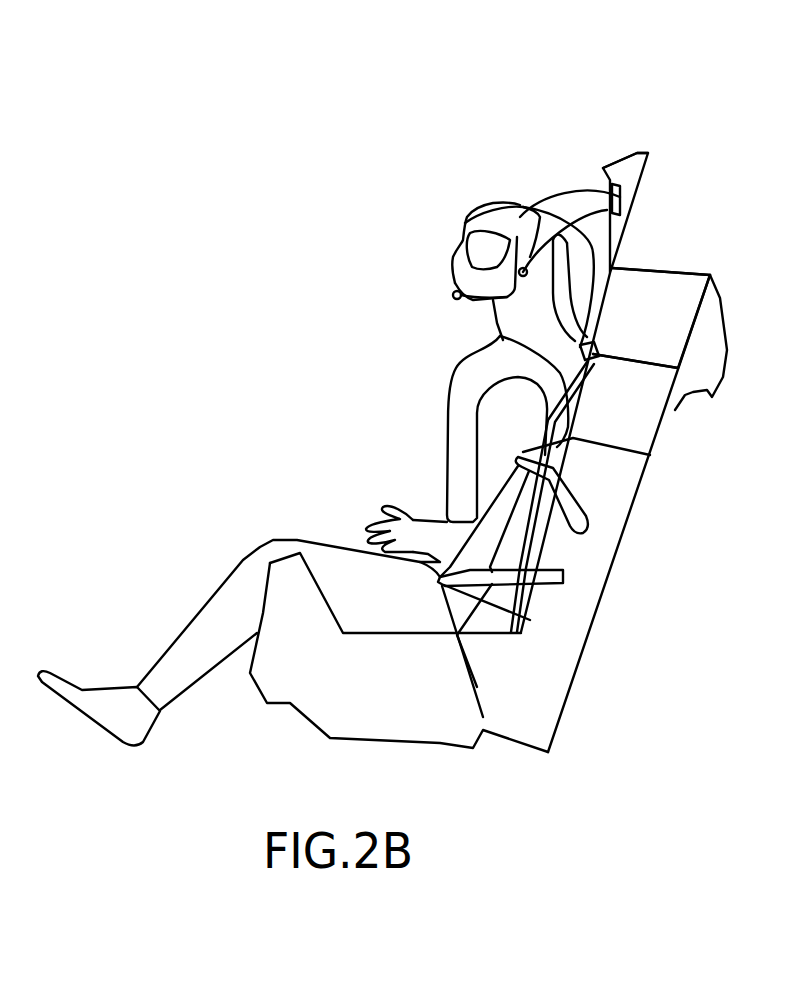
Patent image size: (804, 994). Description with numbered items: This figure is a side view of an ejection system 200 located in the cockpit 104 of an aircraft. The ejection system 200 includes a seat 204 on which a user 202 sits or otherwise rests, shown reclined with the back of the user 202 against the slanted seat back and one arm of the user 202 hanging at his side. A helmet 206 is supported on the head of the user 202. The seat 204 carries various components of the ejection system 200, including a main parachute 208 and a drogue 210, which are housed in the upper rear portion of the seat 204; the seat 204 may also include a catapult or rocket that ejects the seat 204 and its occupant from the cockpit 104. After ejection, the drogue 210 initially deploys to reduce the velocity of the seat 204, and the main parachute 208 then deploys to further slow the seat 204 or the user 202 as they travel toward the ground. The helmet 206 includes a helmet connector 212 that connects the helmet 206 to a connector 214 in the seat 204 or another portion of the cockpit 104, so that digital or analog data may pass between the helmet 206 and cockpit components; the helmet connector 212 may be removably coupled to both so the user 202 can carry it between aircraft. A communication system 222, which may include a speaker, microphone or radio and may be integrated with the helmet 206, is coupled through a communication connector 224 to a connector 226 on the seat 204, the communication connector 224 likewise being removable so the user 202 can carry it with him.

The cockpit 104 is at (458, 132).
The ejection system 200 is at (658, 507).
The user 202 is at (435, 400).
The seat 204 is at (600, 603).
The helmet 206 is at (545, 220).
The main parachute 208 is at (687, 303).
The drogue 210 is at (727, 347).
The helmet connector 212 is at (597, 347).
The connector 214 is at (593, 357).
The communication system 222 is at (534, 218).
The communication connector 224 is at (612, 183).
The connector 226 is at (640, 153).